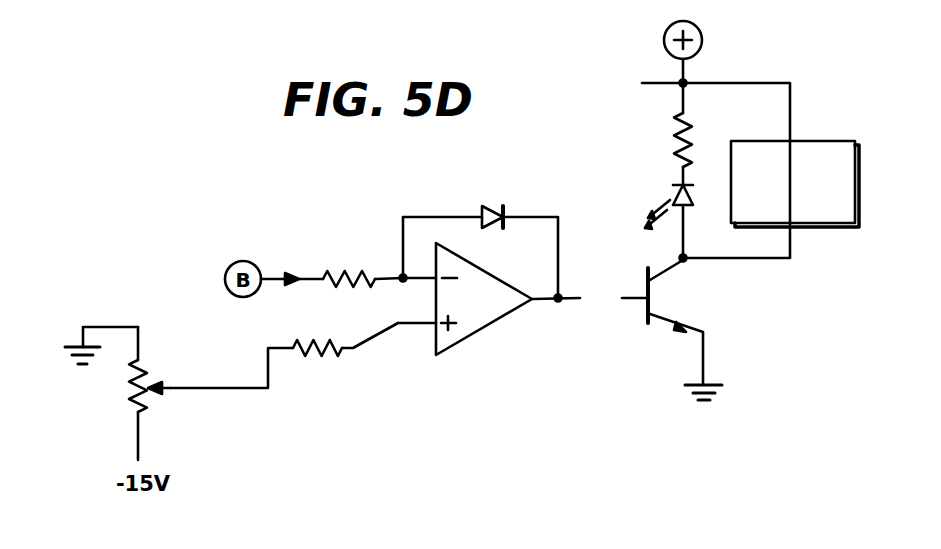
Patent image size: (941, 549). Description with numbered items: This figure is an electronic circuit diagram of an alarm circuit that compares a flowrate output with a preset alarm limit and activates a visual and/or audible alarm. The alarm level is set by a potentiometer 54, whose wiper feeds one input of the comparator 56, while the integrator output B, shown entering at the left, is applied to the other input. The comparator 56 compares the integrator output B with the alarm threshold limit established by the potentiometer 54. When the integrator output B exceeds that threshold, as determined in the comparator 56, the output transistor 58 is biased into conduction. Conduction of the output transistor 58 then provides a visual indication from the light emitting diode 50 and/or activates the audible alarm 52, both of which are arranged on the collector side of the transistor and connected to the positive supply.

The light emitting diode 50 is at (680, 186).
The audible alarm 52 is at (856, 168).
The potentiometer 54 is at (148, 392).
The comparator 56 is at (492, 317).
The output transistor 58 is at (646, 326).